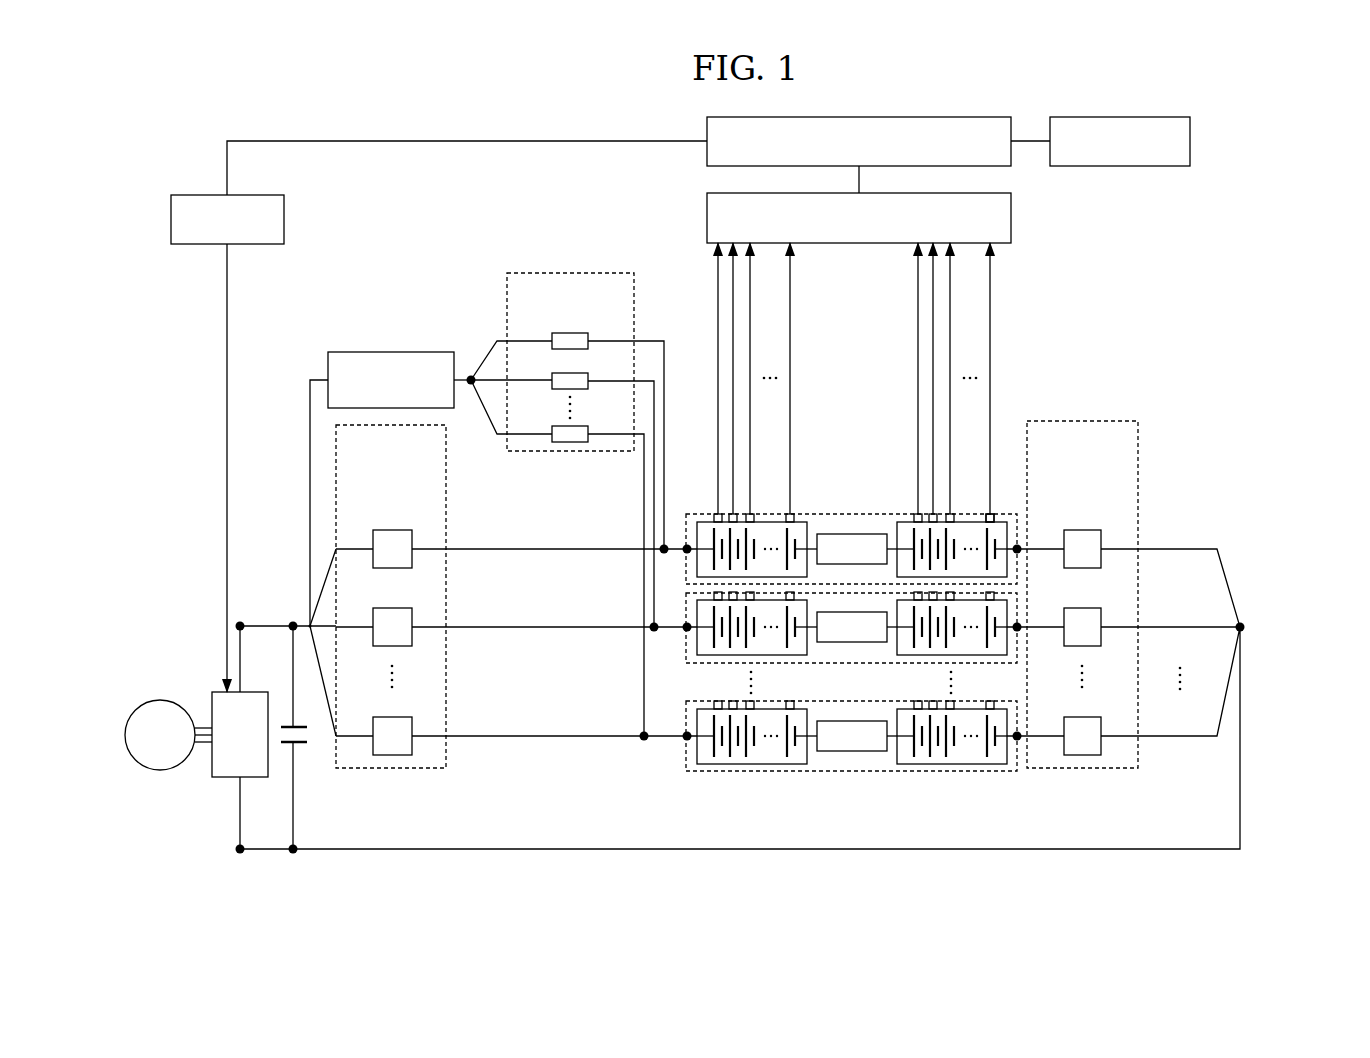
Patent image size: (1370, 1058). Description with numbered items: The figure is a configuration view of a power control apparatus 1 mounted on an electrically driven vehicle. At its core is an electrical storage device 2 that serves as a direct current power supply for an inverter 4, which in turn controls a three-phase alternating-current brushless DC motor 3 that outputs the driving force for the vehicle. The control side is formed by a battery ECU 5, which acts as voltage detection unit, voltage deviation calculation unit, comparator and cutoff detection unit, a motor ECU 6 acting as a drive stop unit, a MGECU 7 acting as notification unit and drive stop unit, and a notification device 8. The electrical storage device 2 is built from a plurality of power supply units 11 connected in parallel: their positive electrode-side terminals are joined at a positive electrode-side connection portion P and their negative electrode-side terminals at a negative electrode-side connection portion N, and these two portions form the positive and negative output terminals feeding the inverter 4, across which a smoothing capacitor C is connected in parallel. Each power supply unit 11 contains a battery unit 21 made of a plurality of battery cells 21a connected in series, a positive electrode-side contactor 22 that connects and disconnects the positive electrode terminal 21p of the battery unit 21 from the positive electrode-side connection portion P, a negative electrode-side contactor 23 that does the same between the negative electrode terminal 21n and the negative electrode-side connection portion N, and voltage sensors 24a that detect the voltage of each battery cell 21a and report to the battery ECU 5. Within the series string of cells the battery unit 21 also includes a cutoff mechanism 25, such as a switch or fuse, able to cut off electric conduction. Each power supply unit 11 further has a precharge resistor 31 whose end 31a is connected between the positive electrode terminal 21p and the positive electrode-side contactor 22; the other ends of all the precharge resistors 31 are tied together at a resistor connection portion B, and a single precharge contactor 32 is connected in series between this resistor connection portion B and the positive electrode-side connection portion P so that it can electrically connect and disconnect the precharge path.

The power control apparatus 1 is at (1199, 302).
The electrical storage device 2 is at (1066, 372).
The motor 3 is at (160, 700).
The inverter 4 is at (225, 777).
The battery ECU 5 is at (1011, 218).
The motor ECU 6 is at (284, 218).
The MGECU 7 is at (945, 115).
The notification device 8 is at (1125, 117).
The power supply unit 11 is at (1226, 545).
The battery unit 21 is at (697, 776).
The battery cell 21a is at (1000, 512).
The negative electrode terminal 21n is at (1020, 552).
The positive electrode terminal 21p is at (687, 545).
The positive electrode-side contactor 22 is at (448, 598).
The negative electrode-side contactor 23 is at (1138, 524).
The voltage sensor 24a is at (797, 512).
The cutoff mechanism 25 is at (855, 534).
The precharge resistor 31 is at (636, 273).
The end of precharge resistor 31a is at (664, 552).
The precharge contactor 32 is at (393, 352).
The resistor connection portion B is at (471, 380).
The positive electrode-side connection portion P is at (310, 630).
The negative electrode-side connection portion N is at (1243, 631).
The smoothing capacitor C is at (293, 745).